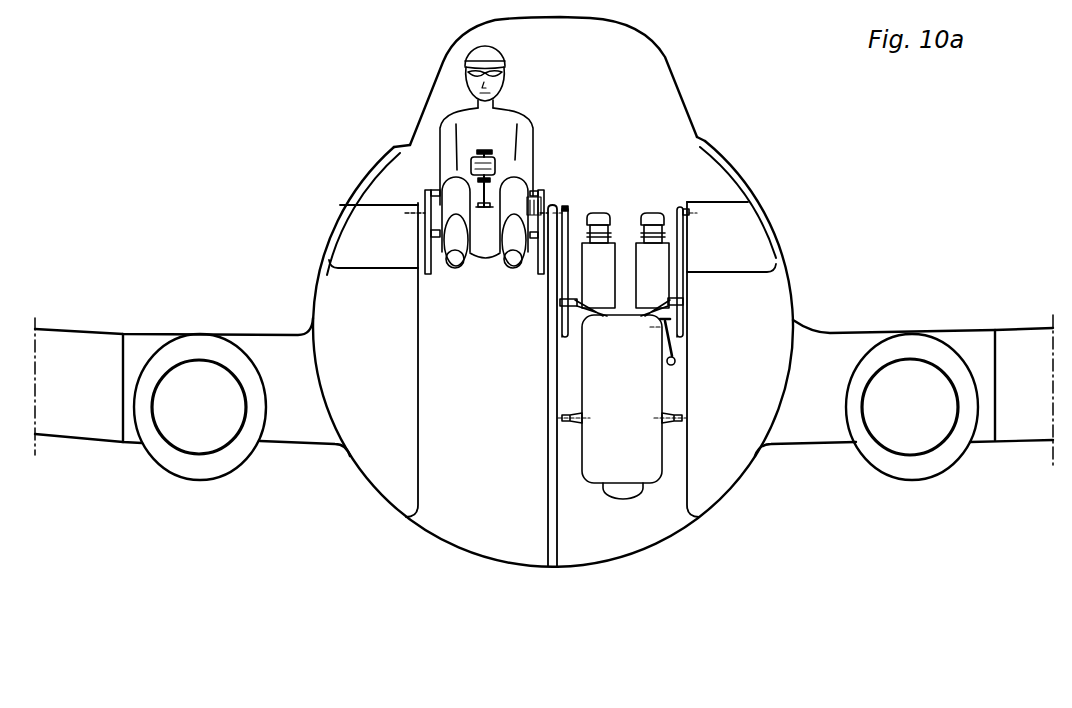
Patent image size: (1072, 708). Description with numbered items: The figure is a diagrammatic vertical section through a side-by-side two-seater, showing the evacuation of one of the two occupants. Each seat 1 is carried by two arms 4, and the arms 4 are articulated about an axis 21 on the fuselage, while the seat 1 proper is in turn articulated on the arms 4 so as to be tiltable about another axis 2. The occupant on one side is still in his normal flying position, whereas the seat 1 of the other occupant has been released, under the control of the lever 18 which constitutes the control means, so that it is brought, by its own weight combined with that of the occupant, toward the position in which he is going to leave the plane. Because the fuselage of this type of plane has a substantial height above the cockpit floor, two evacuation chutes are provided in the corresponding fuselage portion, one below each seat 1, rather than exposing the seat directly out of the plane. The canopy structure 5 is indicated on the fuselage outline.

The seat 1 is at (488, 260).
The axis 2 is at (434, 244).
The arms 4 is at (427, 228).
The canopy rail 5 is at (739, 181).
The lever 18 is at (566, 208).
The axis 21 is at (427, 206).